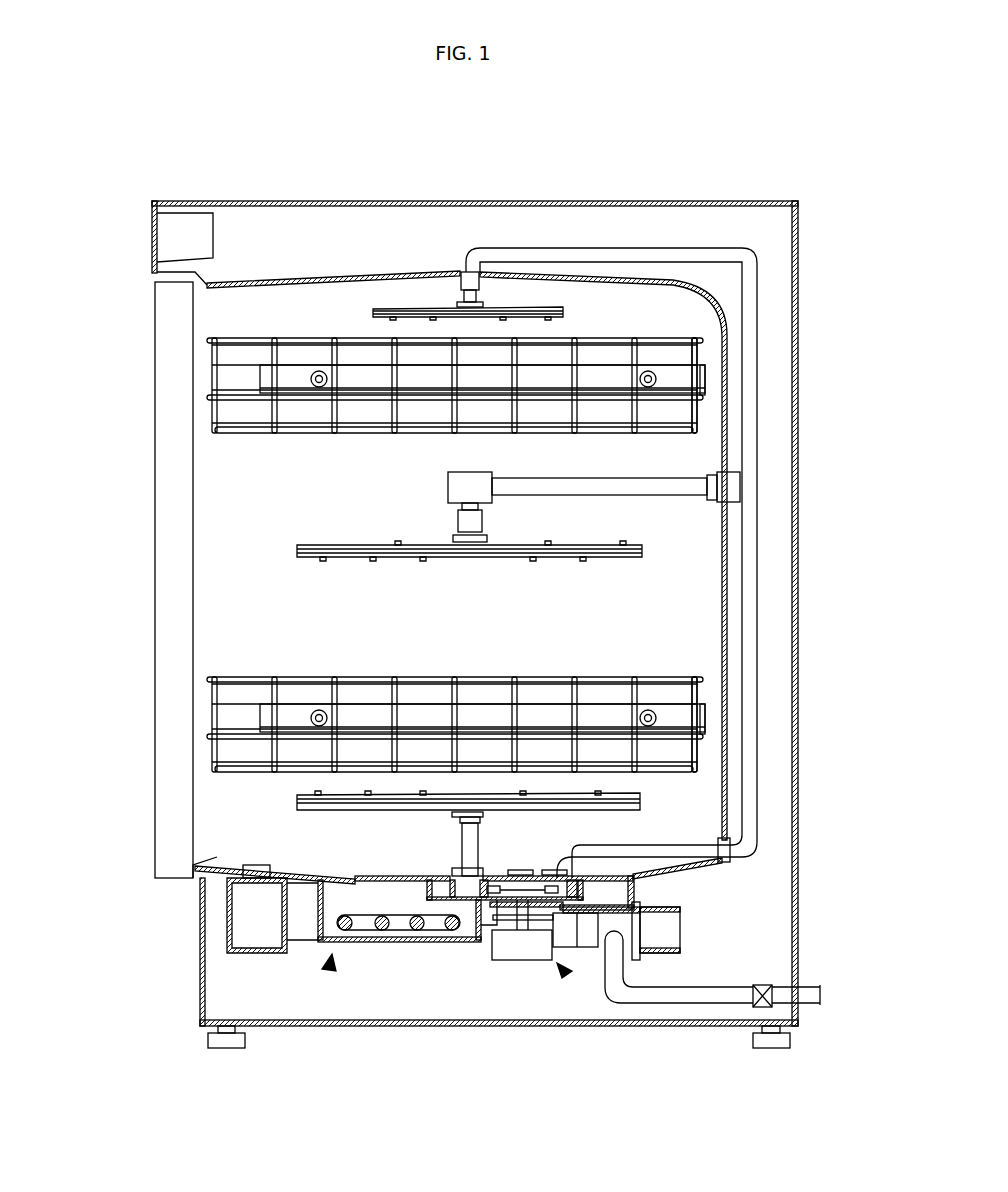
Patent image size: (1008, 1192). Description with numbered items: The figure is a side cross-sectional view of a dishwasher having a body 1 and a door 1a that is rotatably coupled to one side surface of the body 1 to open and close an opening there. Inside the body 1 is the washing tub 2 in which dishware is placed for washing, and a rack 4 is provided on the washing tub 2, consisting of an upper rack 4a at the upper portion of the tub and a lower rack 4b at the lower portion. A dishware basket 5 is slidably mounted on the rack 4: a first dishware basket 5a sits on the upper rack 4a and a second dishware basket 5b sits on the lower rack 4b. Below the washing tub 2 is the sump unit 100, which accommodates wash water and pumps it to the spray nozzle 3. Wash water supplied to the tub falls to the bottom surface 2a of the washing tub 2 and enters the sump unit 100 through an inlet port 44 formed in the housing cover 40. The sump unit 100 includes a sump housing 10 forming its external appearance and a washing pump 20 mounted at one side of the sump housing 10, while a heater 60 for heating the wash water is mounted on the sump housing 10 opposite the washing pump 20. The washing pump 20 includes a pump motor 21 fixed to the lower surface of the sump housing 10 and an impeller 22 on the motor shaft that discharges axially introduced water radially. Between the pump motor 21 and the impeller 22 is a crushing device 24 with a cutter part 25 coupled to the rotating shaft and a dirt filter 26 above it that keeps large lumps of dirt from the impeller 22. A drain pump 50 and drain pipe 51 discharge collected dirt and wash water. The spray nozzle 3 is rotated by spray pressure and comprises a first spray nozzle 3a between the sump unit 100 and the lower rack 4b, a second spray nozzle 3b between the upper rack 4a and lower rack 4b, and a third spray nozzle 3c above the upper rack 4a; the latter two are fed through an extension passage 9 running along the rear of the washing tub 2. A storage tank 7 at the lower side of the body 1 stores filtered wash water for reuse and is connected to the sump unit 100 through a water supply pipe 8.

The body 1 is at (727, 202).
The door 1a is at (160, 803).
The washing tub 2 is at (474, 612).
The bottom surface 2a is at (217, 857).
The spray nozzle 3 is at (474, 574).
The first spray nozzle 3a is at (307, 797).
The second spray nozzle 3b is at (297, 551).
The third spray nozzle 3c is at (375, 314).
The rack 4 is at (374, 555).
The upper rack 4a is at (262, 373).
The lower rack 4b is at (394, 724).
The dishware basket 5 is at (792, 555).
The first dishware basket 5a is at (697, 414).
The second dishware basket 5b is at (773, 724).
The storage tank 7 is at (228, 922).
The water supply pipe 8 is at (297, 940).
The extension passage 9 is at (757, 765).
The sump housing 10 is at (353, 942).
The washing pump 20 is at (568, 975).
The pump motor 21 is at (517, 962).
The impeller 22 is at (507, 892).
The crushing device 24 is at (661, 896).
The cutter part 25 is at (563, 925).
The dirt filter 26 is at (580, 902).
The housing cover 40 is at (397, 876).
The inlet port 44 is at (313, 876).
The drain pump 50 is at (677, 947).
The drain pipe 51 is at (700, 1005).
The heater 60 is at (413, 932).
The sump unit 100 is at (393, 956).